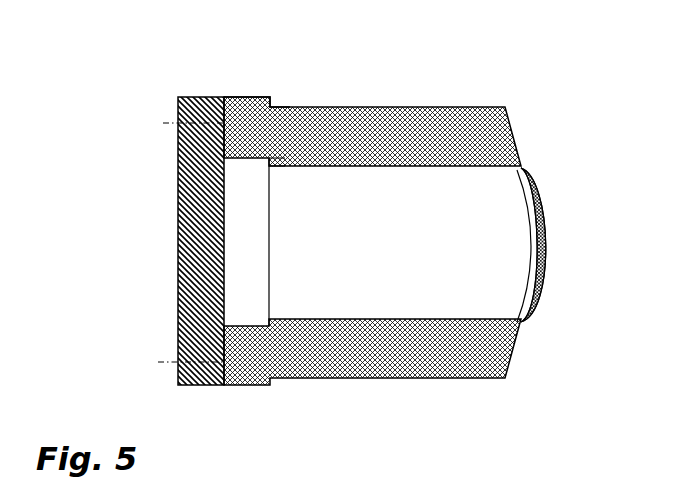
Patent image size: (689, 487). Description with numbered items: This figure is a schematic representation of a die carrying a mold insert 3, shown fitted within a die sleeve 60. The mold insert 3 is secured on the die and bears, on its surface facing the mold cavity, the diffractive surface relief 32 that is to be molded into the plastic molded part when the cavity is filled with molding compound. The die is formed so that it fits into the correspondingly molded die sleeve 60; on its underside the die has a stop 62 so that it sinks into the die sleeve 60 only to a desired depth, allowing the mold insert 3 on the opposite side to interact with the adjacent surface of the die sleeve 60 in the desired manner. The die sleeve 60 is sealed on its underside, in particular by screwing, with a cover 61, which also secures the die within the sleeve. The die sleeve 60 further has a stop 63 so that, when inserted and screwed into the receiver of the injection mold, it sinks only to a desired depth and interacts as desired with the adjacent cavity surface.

The mold insert 3 is at (538, 257).
The surface relief 32 is at (541, 194).
The die sleeve 60 is at (376, 379).
The cover 61 is at (196, 235).
The stop 62 is at (275, 156).
The stop 63 is at (277, 96).